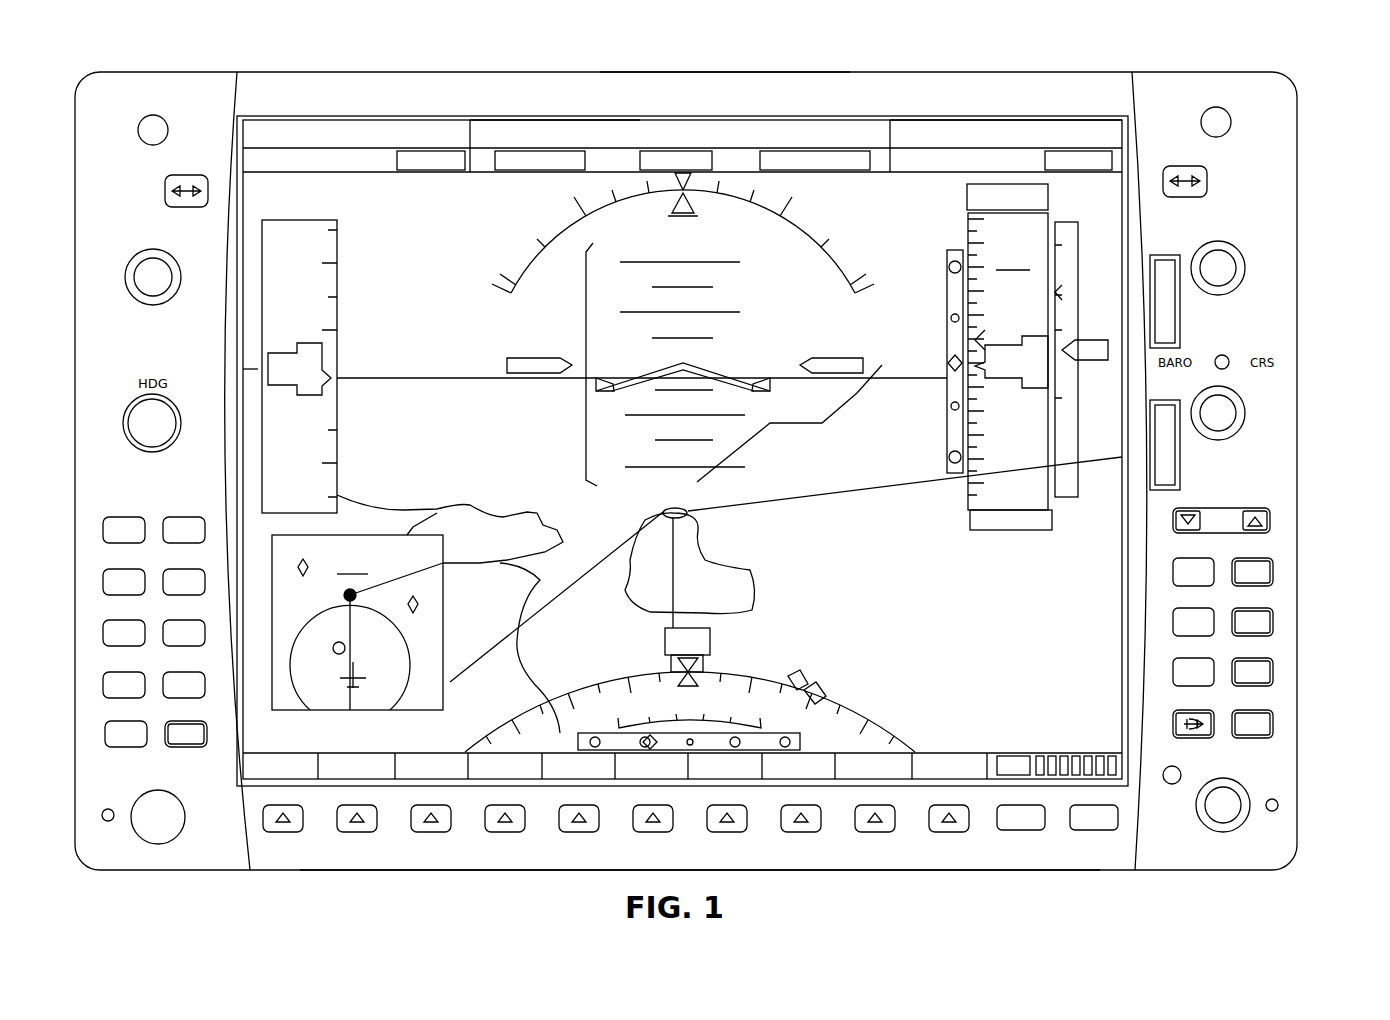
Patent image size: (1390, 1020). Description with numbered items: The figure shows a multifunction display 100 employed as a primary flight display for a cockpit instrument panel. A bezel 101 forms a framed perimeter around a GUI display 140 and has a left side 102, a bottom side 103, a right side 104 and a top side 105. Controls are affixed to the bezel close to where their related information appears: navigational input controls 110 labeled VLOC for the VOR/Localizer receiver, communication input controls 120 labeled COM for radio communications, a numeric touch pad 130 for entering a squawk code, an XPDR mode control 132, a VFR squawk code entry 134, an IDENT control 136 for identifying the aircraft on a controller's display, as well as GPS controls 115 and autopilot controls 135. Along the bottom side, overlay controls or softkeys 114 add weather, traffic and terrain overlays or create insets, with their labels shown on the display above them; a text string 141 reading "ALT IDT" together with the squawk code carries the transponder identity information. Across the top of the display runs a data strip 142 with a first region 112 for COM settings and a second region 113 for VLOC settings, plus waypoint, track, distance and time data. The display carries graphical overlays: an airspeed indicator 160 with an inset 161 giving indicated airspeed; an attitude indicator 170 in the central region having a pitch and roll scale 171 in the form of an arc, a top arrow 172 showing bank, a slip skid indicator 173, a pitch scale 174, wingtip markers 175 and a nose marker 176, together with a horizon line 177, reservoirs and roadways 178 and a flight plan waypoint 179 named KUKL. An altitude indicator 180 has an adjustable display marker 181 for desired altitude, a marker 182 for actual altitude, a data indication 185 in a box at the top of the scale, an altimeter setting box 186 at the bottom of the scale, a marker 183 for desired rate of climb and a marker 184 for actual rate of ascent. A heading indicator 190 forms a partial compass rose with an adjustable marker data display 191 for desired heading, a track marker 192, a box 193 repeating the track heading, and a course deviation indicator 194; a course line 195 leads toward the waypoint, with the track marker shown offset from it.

The multifunction display 100 is at (1302, 104).
The bezel 101 is at (890, 72).
The left side 102 is at (78, 470).
The bottom side 103 is at (822, 864).
The right side 104 is at (1298, 397).
The top side 105 is at (718, 70).
The navigational input controls 110 is at (1268, 98).
The first region 112 is at (372, 172).
The second region 113 is at (1030, 118).
The overlay controls 114 is at (252, 840).
The GPS controls 115 is at (1243, 790).
The communication input controls 120 is at (96, 110).
The numeric touch pad 130 is at (103, 510).
The XPDR mode control 132 is at (140, 838).
The VFR squawk code entry 134 is at (130, 748).
The autopilot controls 135 is at (1305, 508).
The IDENT control 136 is at (185, 749).
The GUI display 140 is at (690, 559).
The text string 141 is at (356, 742).
The data strip 142 is at (556, 102).
The airspeed indicator 160 is at (352, 276).
The inset 161 is at (333, 390).
The attitude indicator 170 is at (659, 329).
The pitch and roll scale 171 is at (812, 236).
The top arrow 172 is at (693, 178).
The slip skid indicator 173 is at (683, 216).
The pitch scale 174 is at (586, 410).
The wingtip markers 175 is at (535, 356).
The nose marker 176 is at (746, 376).
The horizon line 177 is at (441, 378).
The reservoirs and roadways 178 is at (546, 527).
The flight plan waypoint 179 is at (662, 512).
The altitude indicator 180 is at (1007, 400).
The adjustable display marker 181 is at (975, 336).
The marker 182 is at (985, 386).
The marker 183 is at (1063, 292).
The marker 184 is at (1091, 339).
The data indication 185 is at (968, 199).
The barometric setting readout 186 is at (969, 520).
The heading indicator 190 is at (857, 705).
The adjustable marker data display 191 is at (827, 680).
The track marker 192 is at (698, 664).
The box 193 is at (665, 645).
The course deviation indicator 194 is at (607, 740).
The course line 195 is at (675, 587).